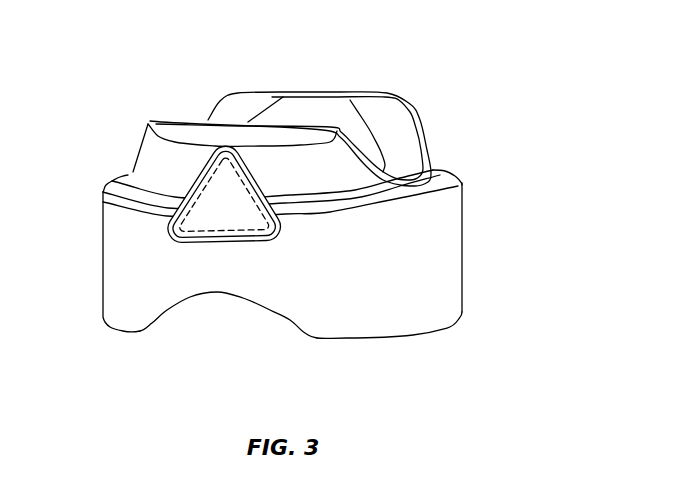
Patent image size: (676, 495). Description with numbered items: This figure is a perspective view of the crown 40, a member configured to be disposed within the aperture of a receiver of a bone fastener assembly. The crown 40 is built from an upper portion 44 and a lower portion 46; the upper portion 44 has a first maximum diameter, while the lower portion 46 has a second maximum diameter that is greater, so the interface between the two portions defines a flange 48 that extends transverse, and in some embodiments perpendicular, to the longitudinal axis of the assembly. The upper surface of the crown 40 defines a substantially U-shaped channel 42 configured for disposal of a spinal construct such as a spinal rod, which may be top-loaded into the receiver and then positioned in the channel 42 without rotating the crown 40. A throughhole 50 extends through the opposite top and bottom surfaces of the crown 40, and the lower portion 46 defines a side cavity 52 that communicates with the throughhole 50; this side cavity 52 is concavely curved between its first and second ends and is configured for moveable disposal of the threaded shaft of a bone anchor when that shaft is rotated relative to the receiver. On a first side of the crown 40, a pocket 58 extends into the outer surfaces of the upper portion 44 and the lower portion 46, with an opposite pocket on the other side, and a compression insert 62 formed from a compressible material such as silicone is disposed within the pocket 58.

The crown 40 is at (443, 255).
The channel 42 is at (392, 143).
The upper portion 44 is at (157, 152).
The lower portion 46 is at (417, 318).
The flange 48 is at (133, 183).
The throughhole 50 is at (317, 113).
The side cavity 52 is at (212, 332).
The pocket 58 is at (182, 245).
The compression insert 62 is at (223, 177).